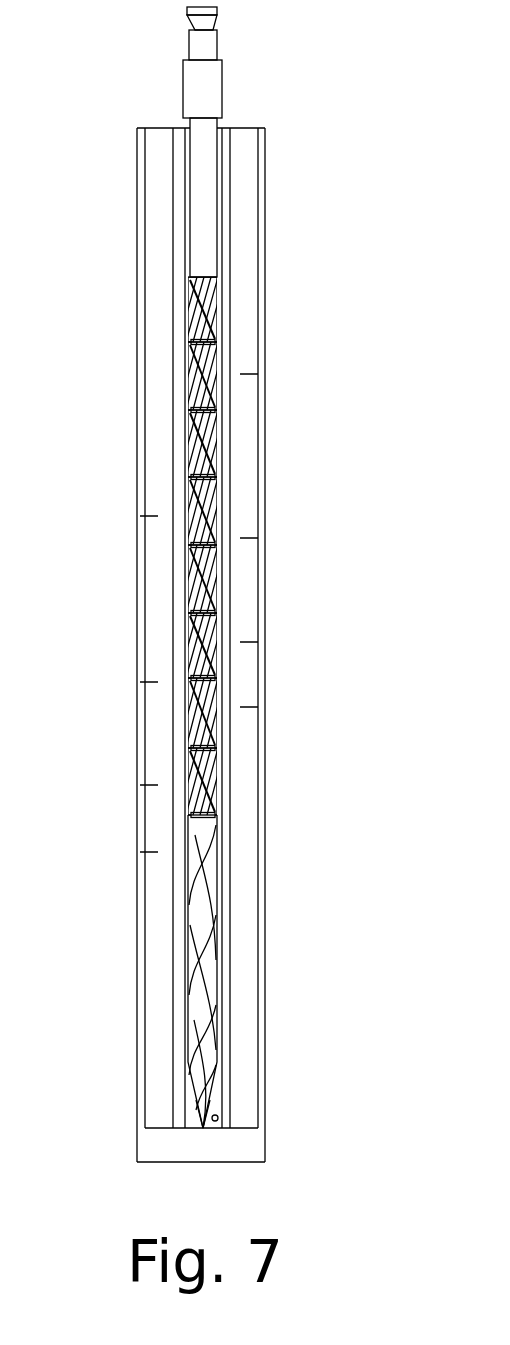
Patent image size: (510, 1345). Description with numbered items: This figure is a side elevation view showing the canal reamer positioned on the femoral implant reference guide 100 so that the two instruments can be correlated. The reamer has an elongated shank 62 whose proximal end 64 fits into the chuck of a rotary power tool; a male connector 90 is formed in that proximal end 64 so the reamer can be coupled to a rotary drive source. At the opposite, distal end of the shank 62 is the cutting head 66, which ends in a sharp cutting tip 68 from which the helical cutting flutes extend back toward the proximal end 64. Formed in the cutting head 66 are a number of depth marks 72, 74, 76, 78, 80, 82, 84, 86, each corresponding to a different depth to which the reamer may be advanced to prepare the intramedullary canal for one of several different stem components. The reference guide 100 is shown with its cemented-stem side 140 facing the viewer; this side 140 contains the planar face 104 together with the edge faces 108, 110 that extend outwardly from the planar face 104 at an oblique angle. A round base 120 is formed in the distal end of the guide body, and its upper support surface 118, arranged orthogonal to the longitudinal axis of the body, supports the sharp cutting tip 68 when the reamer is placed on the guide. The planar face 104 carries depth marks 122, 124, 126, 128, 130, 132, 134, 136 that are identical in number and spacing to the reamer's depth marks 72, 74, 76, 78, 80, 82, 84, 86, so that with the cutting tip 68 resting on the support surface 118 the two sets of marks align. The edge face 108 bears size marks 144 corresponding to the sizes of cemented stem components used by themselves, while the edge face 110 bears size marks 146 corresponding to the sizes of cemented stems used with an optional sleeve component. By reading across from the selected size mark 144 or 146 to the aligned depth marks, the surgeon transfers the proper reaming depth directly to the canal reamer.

The elongated shank 62 is at (205, 220).
The proximal end 64 is at (215, 93).
The cutting head 66 is at (205, 1035).
The sharp cutting tip 68 is at (203, 1128).
The depth mark 72 is at (188, 815).
The depth mark 74 is at (188, 748).
The depth mark 76 is at (188, 678).
The depth mark 78 is at (188, 613).
The depth mark 80 is at (188, 545).
The depth mark 82 is at (188, 477).
The depth mark 84 is at (188, 410).
The depth mark 86 is at (188, 342).
The male connector 90 is at (215, 43).
The femoral implant reference guide 100 is at (252, 178).
The planar face 104 is at (220, 268).
The edge face 108 is at (152, 1003).
The edge face 110 is at (243, 990).
The upper support surface 118 is at (160, 1128).
The round base 120 is at (232, 1162).
The depth mark 122 is at (217, 815).
The depth mark 124 is at (217, 748).
The depth mark 126 is at (217, 678).
The depth mark 128 is at (217, 613).
The depth mark 130 is at (217, 545).
The depth mark 132 is at (217, 477).
The depth mark 134 is at (217, 410).
The depth mark 136 is at (217, 342).
The side 140 is at (243, 933).
The size marks 144 is at (141, 516).
The size marks 146 is at (258, 372).